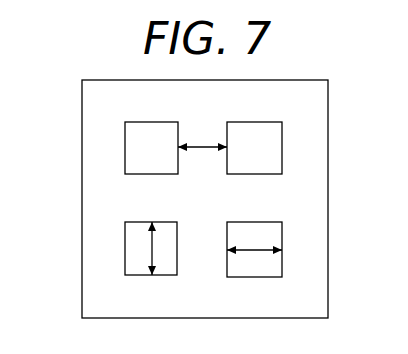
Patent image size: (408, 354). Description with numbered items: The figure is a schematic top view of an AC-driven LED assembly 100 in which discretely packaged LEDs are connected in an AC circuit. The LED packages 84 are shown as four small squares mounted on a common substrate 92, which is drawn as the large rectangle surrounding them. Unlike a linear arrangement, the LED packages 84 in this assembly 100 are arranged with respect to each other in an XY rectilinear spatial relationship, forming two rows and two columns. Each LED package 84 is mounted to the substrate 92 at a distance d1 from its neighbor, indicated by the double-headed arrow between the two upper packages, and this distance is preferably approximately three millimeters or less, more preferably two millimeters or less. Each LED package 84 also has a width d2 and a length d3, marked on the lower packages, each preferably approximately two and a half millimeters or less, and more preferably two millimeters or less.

The AC-driven LED assembly 100 is at (74, 226).
The substrate 92 is at (205, 199).
The LED packages 84 is at (150, 135).
The distance between LED packages d1 is at (203, 146).
The width of LED package d2 is at (255, 249).
The length of LED package d3 is at (148, 246).